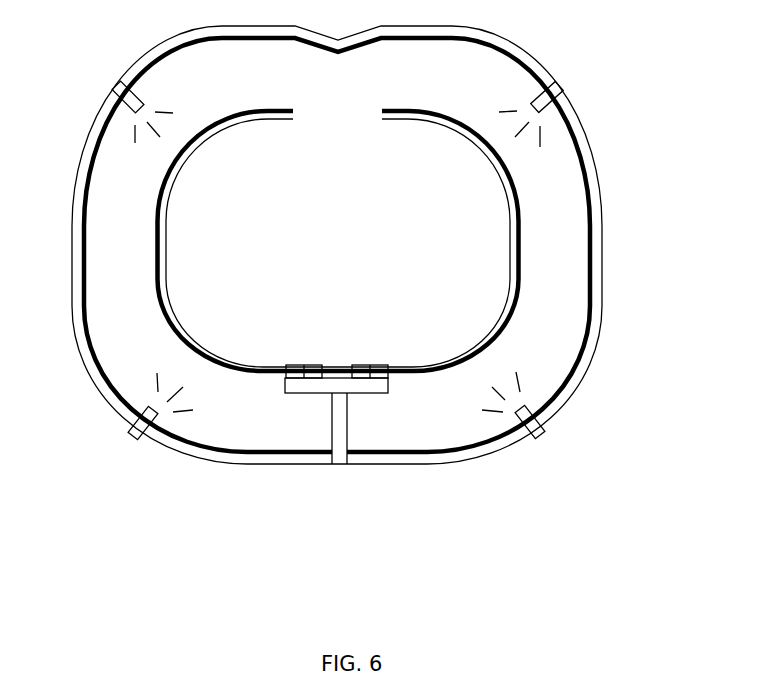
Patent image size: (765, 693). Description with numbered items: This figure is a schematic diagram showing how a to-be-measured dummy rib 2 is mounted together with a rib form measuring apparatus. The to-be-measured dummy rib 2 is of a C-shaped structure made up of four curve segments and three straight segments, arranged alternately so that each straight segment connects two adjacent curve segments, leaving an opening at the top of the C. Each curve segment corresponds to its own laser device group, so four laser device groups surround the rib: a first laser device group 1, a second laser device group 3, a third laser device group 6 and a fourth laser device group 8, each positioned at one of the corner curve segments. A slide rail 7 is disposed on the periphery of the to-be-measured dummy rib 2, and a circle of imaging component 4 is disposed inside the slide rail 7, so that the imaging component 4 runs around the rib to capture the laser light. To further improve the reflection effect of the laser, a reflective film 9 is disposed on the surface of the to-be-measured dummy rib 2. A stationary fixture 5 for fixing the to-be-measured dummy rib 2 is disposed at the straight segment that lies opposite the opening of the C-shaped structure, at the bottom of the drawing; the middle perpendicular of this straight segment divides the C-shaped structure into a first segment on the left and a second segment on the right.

The first laser device group 1 is at (112, 92).
The to-be-measured dummy rib 2 is at (158, 212).
The second laser device group 3 is at (138, 426).
The imaging component 4 is at (187, 440).
The stationary fixture 5 is at (338, 412).
The third laser device group 6 is at (545, 433).
The slide rail 7 is at (599, 232).
The fourth laser device group 8 is at (560, 88).
The reflective film on surface of to-be-measured dummy rib 9 is at (415, 110).